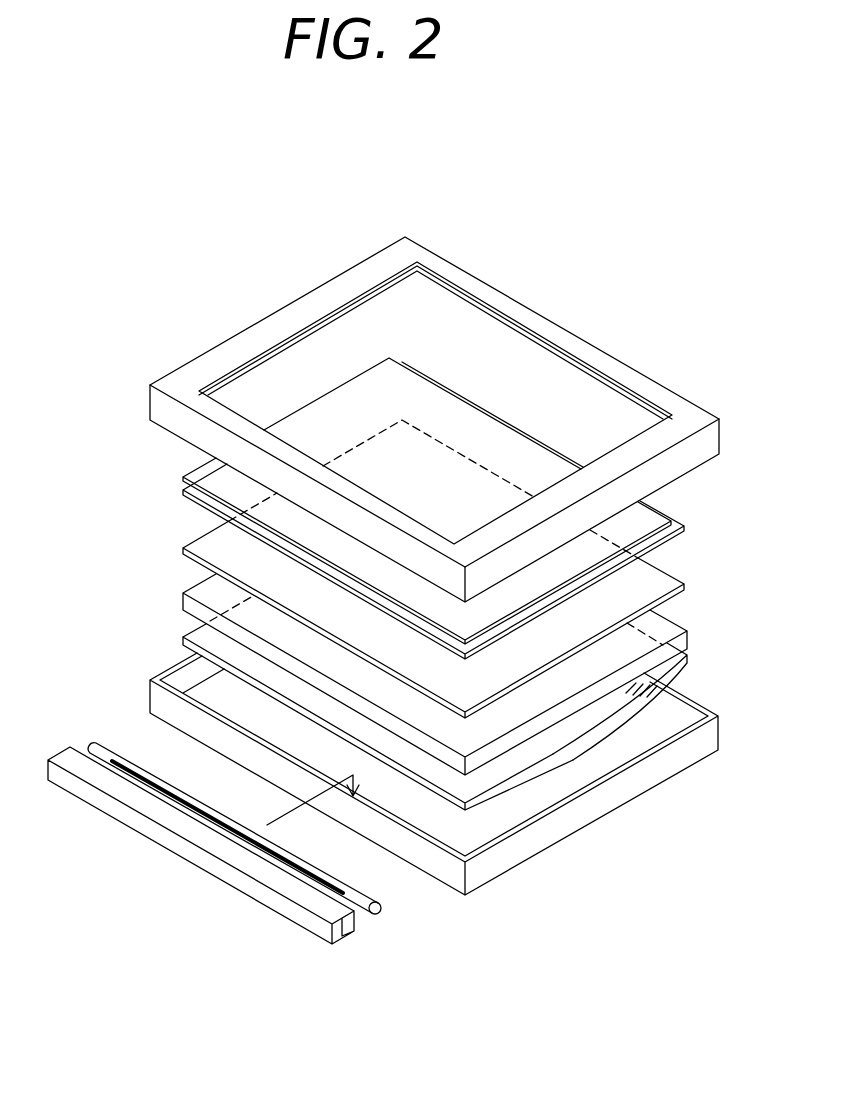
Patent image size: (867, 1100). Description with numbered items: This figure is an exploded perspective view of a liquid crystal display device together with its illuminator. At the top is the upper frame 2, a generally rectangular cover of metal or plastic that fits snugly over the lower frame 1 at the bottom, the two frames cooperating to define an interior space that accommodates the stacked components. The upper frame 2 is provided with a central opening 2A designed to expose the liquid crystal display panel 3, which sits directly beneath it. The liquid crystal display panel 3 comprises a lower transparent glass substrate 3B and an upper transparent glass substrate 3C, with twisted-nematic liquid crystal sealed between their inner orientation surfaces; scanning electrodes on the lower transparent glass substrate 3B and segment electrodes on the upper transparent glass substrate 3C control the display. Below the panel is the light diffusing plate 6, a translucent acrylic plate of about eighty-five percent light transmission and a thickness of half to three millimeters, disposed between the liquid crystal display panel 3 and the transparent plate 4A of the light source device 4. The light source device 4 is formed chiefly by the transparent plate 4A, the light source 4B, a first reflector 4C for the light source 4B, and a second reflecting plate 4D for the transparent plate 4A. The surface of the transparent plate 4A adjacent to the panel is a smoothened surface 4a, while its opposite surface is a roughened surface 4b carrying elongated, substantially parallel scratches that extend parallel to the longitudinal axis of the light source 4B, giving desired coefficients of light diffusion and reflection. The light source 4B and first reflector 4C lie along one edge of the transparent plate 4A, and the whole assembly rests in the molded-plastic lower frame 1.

The lower frame 1 is at (573, 820).
The upper frame 2 is at (451, 419).
The central opening 2A is at (268, 352).
The liquid crystal display panel 3 is at (455, 508).
The lower transparent glass substrate 3B is at (683, 548).
The upper transparent glass substrate 3C is at (650, 521).
The light source device 4 is at (394, 752).
The transparent plate 4A is at (183, 603).
The smoothened surface 4a is at (625, 643).
The light source 4B is at (122, 758).
The first reflector 4C is at (201, 800).
The second reflecting plate 4D is at (193, 642).
The roughened surface 4b is at (663, 688).
The light diffusing plate 6 is at (642, 588).